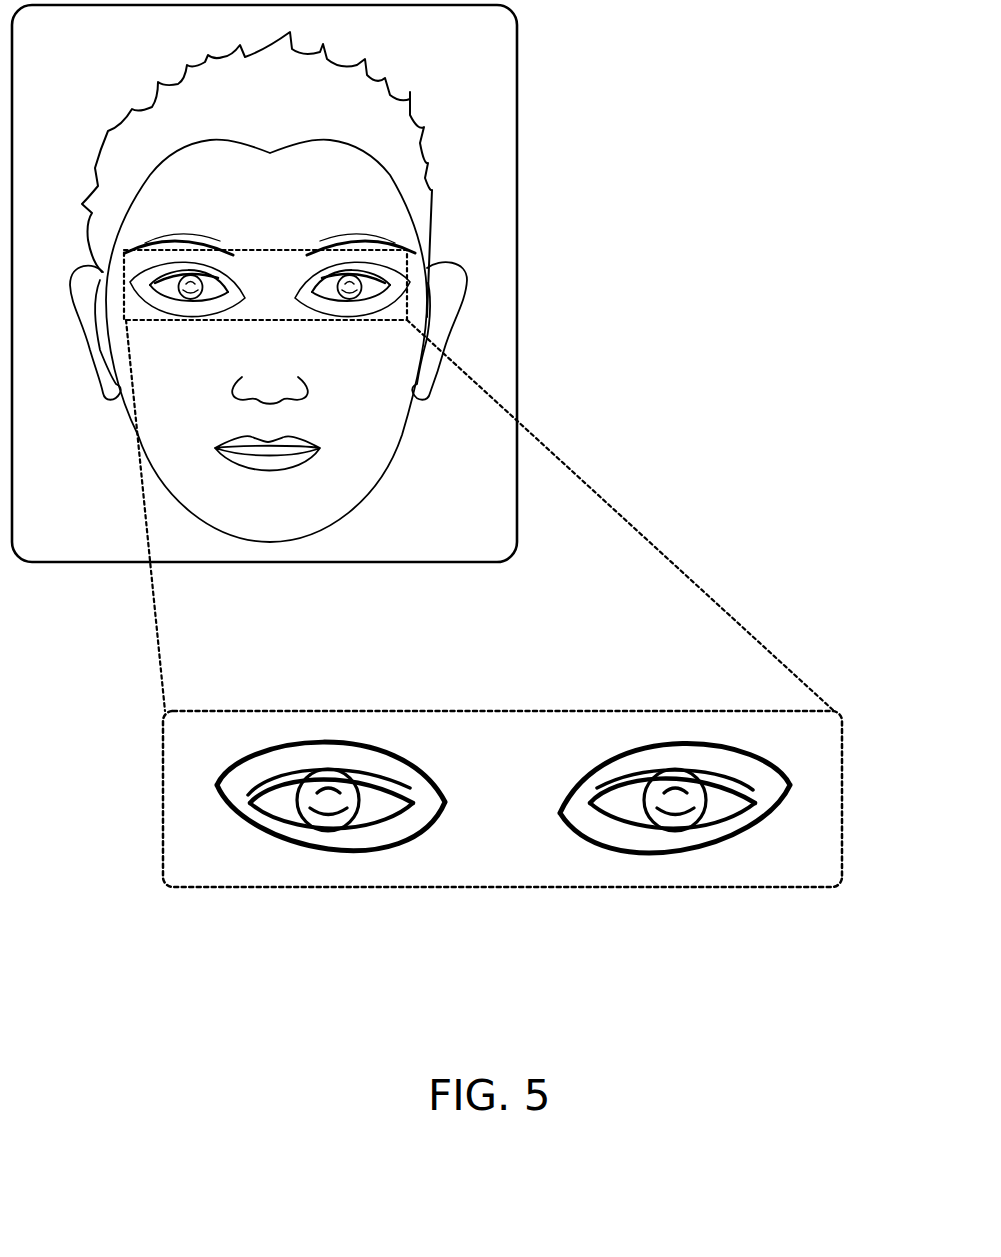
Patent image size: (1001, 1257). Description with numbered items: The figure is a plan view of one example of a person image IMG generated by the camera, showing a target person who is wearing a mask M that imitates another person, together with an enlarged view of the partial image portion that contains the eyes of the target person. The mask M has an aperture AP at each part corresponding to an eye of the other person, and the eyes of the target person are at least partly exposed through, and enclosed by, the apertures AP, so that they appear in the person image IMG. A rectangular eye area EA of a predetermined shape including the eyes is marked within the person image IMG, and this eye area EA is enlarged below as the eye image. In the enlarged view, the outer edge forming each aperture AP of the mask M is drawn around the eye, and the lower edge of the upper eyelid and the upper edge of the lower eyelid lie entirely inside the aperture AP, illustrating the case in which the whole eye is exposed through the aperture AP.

The mask M is at (124, 131).
The person image IMG is at (517, 318).
The aperture AP is at (393, 278).
The eye area EA is at (405, 252).